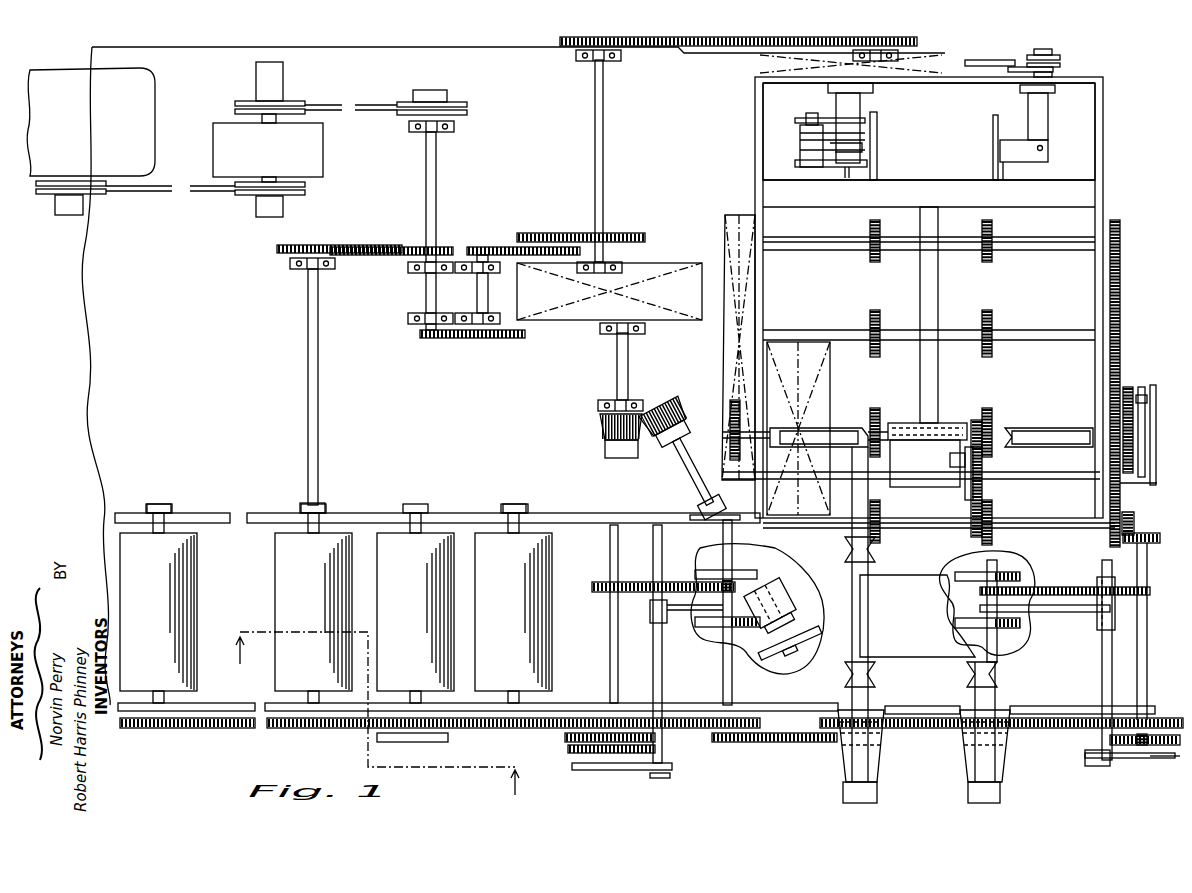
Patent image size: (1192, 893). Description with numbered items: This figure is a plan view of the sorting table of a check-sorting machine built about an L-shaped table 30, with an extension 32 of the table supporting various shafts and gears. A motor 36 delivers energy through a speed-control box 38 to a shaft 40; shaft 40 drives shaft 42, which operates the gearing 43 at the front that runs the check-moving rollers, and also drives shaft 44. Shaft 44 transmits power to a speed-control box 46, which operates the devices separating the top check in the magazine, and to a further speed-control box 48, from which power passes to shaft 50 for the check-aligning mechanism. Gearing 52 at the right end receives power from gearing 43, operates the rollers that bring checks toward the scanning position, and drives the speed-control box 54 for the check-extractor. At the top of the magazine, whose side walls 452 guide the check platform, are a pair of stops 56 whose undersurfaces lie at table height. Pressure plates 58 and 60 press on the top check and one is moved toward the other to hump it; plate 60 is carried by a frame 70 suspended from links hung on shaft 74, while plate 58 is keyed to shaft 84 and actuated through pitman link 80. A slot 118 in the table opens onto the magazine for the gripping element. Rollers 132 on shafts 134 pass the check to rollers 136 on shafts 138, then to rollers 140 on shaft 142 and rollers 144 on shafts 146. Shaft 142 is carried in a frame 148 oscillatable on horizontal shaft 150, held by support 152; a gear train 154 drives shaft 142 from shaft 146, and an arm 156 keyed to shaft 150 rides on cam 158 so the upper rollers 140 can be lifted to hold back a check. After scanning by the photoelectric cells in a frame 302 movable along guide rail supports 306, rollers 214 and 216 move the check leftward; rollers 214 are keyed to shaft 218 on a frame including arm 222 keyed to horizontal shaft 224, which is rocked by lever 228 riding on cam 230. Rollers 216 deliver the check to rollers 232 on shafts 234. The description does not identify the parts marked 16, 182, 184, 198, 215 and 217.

The section line 16 is at (381, 724).
The table 30 is at (834, 370).
The extension 32 is at (154, 376).
The motor 36 is at (131, 141).
The speed-control box 38 is at (305, 139).
The shaft 40 is at (433, 196).
The shaft 42 is at (319, 379).
The gearing 43 is at (348, 729).
The shaft 44 is at (600, 148).
The speed-control box 46 is at (946, 60).
The speed-control box 48 is at (609, 360).
The shaft 50 is at (688, 478).
The gearing 52 is at (1122, 315).
The speed-control box 54 is at (738, 339).
The stops 56 is at (1072, 168).
The pressure plate 58 is at (994, 155).
The pressure plate 60 is at (878, 153).
The frame 70 is at (848, 176).
The shaft 74 is at (805, 148).
The pitman link 80 is at (1008, 63).
The shaft 84 is at (1055, 74).
The slot 118 is at (938, 296).
The rollers 132 is at (868, 229).
The shafts 134 is at (929, 232).
The rollers 136 is at (870, 319).
The shafts 138 is at (1055, 341).
The rollers 140 is at (875, 411).
The shaft 142 is at (972, 425).
The rollers 144 is at (878, 518).
The shafts 146 is at (1060, 523).
The frame 148 is at (908, 415).
The horizontal shaft 150 is at (1037, 466).
The support 152 is at (1100, 482).
The gear train 154 is at (983, 482).
The arm 156 is at (1160, 395).
The cam 158 is at (1142, 386).
The cam 182 is at (788, 598).
The lever 184 is at (803, 618).
The housing 198 is at (765, 664).
The rollers 214 is at (1017, 569).
The gear 215 is at (1030, 577).
The rollers 216 is at (716, 567).
The block 217 is at (700, 628).
The shaft 218 is at (1003, 557).
The arm 222 is at (1078, 607).
The horizontal shaft 224 is at (1103, 690).
The lever 228 is at (1137, 760).
The cam 230 is at (1157, 760).
The rollers 232 is at (336, 603).
The shafts 234 is at (178, 518).
The frame 302 is at (917, 616).
The guide rail supports 306 is at (852, 694).
The side walls 452 is at (929, 135).